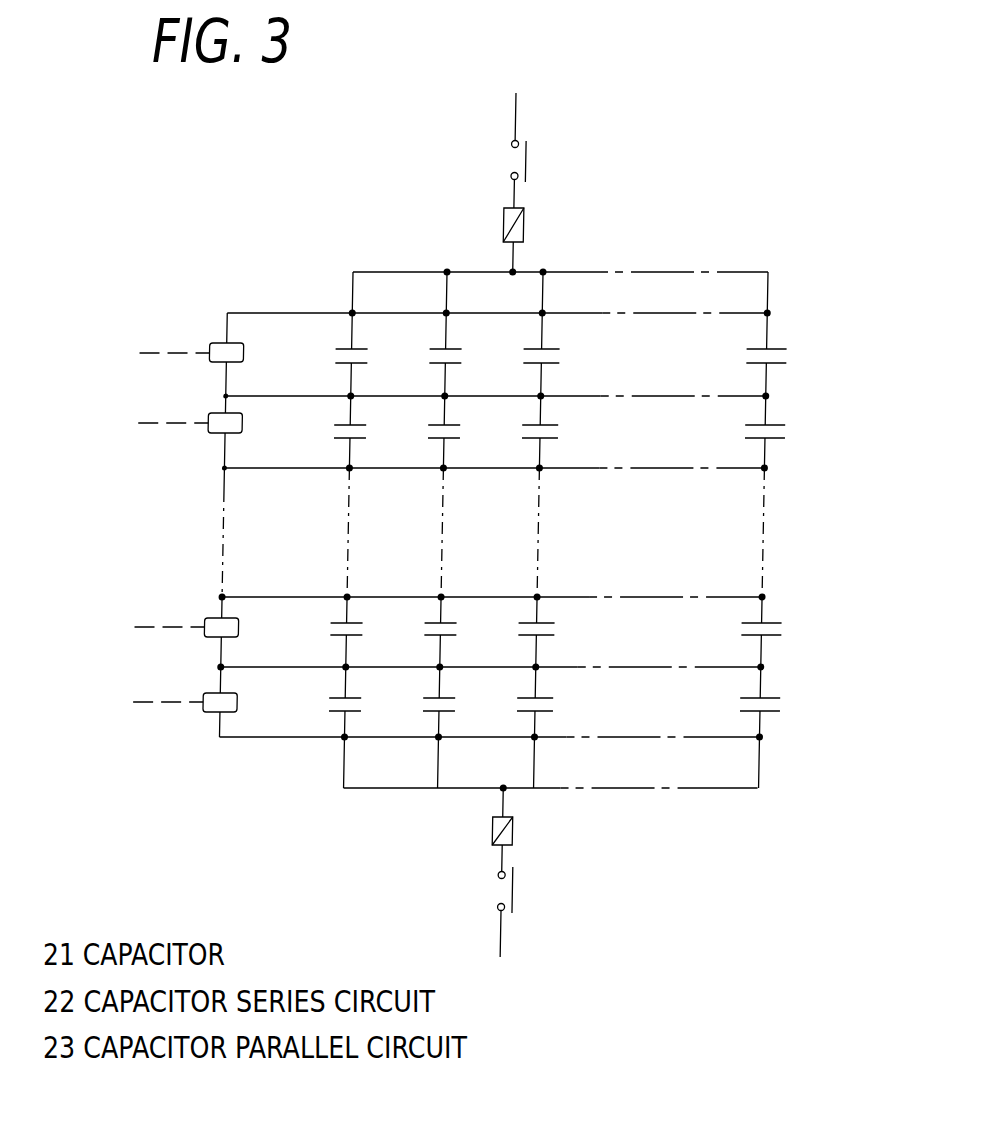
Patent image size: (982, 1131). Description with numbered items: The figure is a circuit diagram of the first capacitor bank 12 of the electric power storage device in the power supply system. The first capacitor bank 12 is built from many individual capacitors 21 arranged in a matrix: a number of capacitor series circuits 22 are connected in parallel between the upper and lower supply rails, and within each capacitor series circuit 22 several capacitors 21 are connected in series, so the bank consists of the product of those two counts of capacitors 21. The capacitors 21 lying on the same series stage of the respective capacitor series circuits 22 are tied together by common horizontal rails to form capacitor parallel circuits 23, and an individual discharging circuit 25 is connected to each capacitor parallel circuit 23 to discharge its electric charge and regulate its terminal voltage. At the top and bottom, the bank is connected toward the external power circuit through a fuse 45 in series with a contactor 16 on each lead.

The first capacitor bank 12 is at (722, 257).
The contactor 16 is at (529, 158).
The capacitor 21 is at (348, 348).
The capacitor series circuit 22 is at (452, 334).
The capacitor parallel circuit 23 is at (283, 597).
The individual discharging circuit 25 is at (224, 412).
The fuse 45 is at (528, 225).